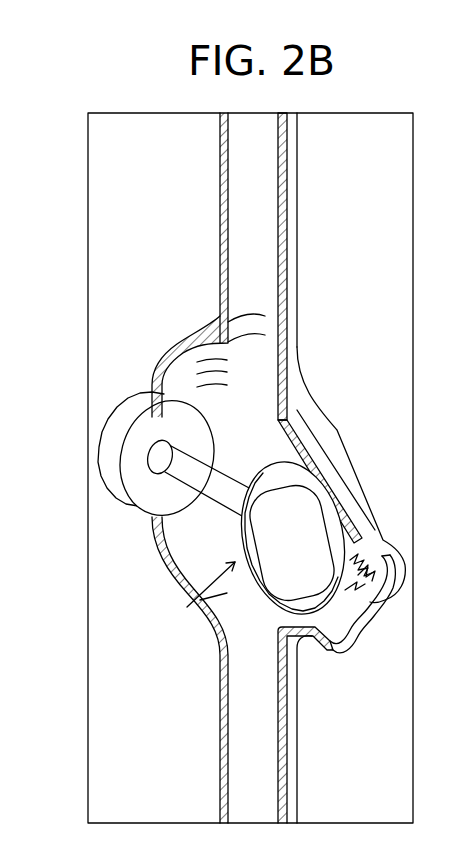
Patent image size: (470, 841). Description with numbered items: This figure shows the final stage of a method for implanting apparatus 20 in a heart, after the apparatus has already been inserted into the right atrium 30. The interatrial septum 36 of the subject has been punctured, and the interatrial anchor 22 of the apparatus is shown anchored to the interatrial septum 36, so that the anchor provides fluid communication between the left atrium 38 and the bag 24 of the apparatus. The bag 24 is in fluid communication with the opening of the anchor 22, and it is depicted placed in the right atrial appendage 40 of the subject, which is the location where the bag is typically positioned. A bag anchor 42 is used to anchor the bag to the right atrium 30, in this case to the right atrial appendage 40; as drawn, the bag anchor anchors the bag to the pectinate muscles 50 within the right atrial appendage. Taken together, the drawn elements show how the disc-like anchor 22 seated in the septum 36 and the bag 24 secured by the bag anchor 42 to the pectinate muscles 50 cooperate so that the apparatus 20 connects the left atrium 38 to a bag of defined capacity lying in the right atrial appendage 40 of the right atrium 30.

The apparatus 20 is at (187, 607).
The interatrial anchor 22 is at (106, 501).
The bag 24 is at (300, 452).
The right atrium 30 is at (262, 441).
The interatrial septum 36 is at (162, 542).
The left atrium 38 is at (146, 376).
The right atrial appendage 40 is at (350, 523).
The bag anchor 42 is at (378, 545).
The pectinate muscles 50 is at (377, 600).